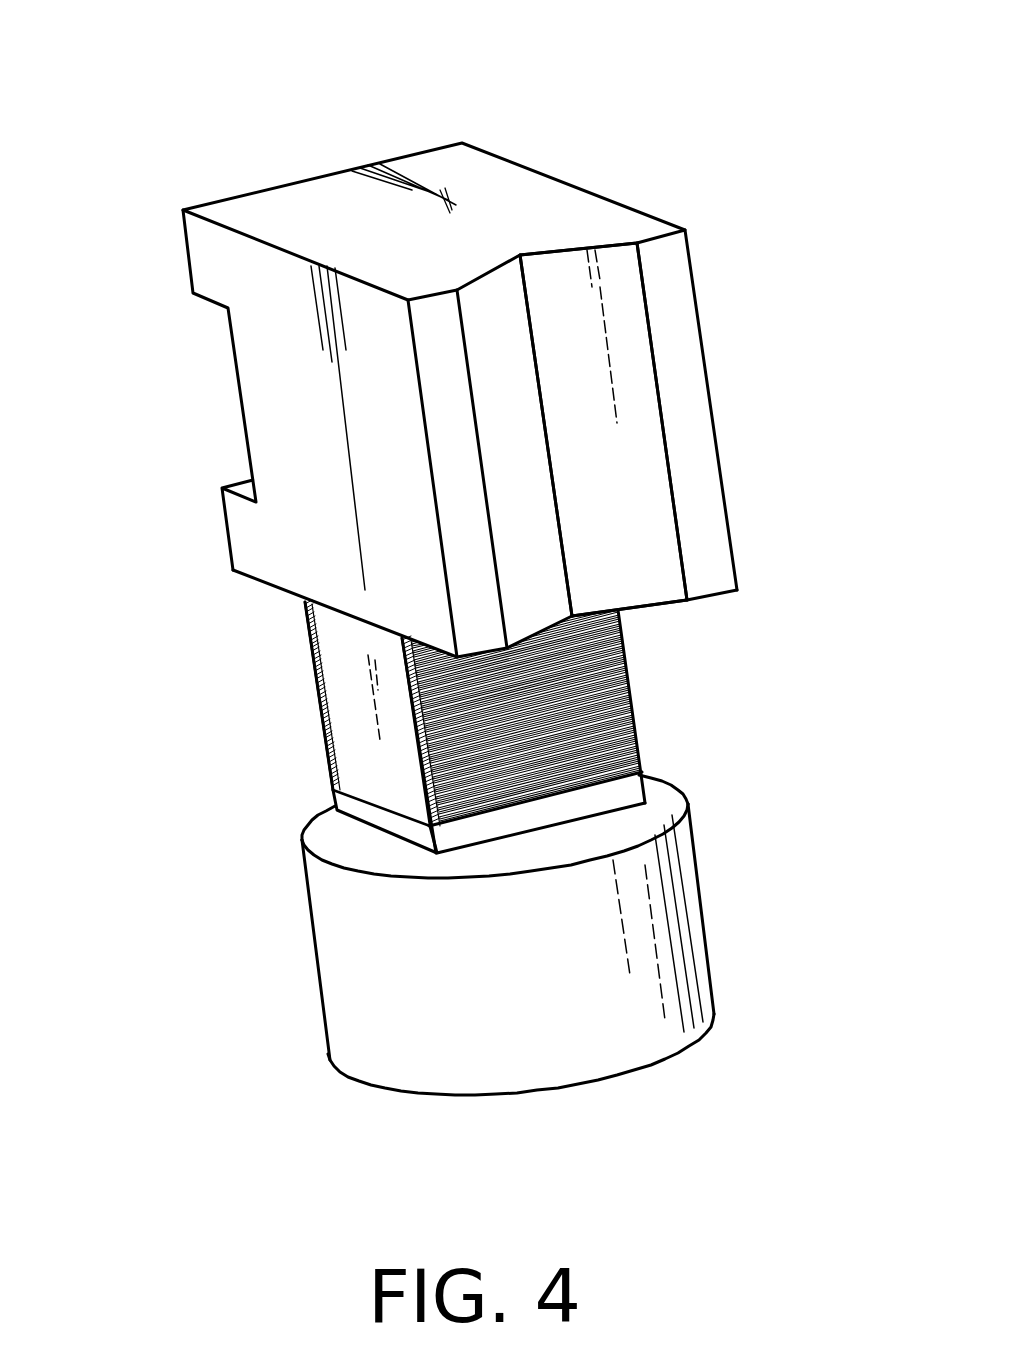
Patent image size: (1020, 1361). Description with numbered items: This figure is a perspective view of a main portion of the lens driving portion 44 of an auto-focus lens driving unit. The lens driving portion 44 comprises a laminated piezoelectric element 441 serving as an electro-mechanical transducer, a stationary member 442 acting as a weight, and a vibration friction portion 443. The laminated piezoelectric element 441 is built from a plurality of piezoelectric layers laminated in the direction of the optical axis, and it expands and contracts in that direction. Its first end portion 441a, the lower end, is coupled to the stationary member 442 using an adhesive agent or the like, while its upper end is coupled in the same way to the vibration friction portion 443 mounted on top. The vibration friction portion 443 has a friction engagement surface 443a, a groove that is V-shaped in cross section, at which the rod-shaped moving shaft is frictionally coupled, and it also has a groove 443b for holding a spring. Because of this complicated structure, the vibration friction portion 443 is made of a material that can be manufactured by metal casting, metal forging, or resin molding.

The lens driving portion 44 is at (701, 86).
The laminated piezoelectric element 441 is at (632, 683).
The first end portion 441a is at (597, 820).
The stationary member 442 is at (613, 1060).
The vibration friction portion 443 is at (505, 185).
The friction engagement surface 443a is at (628, 390).
The groove 443b is at (238, 397).